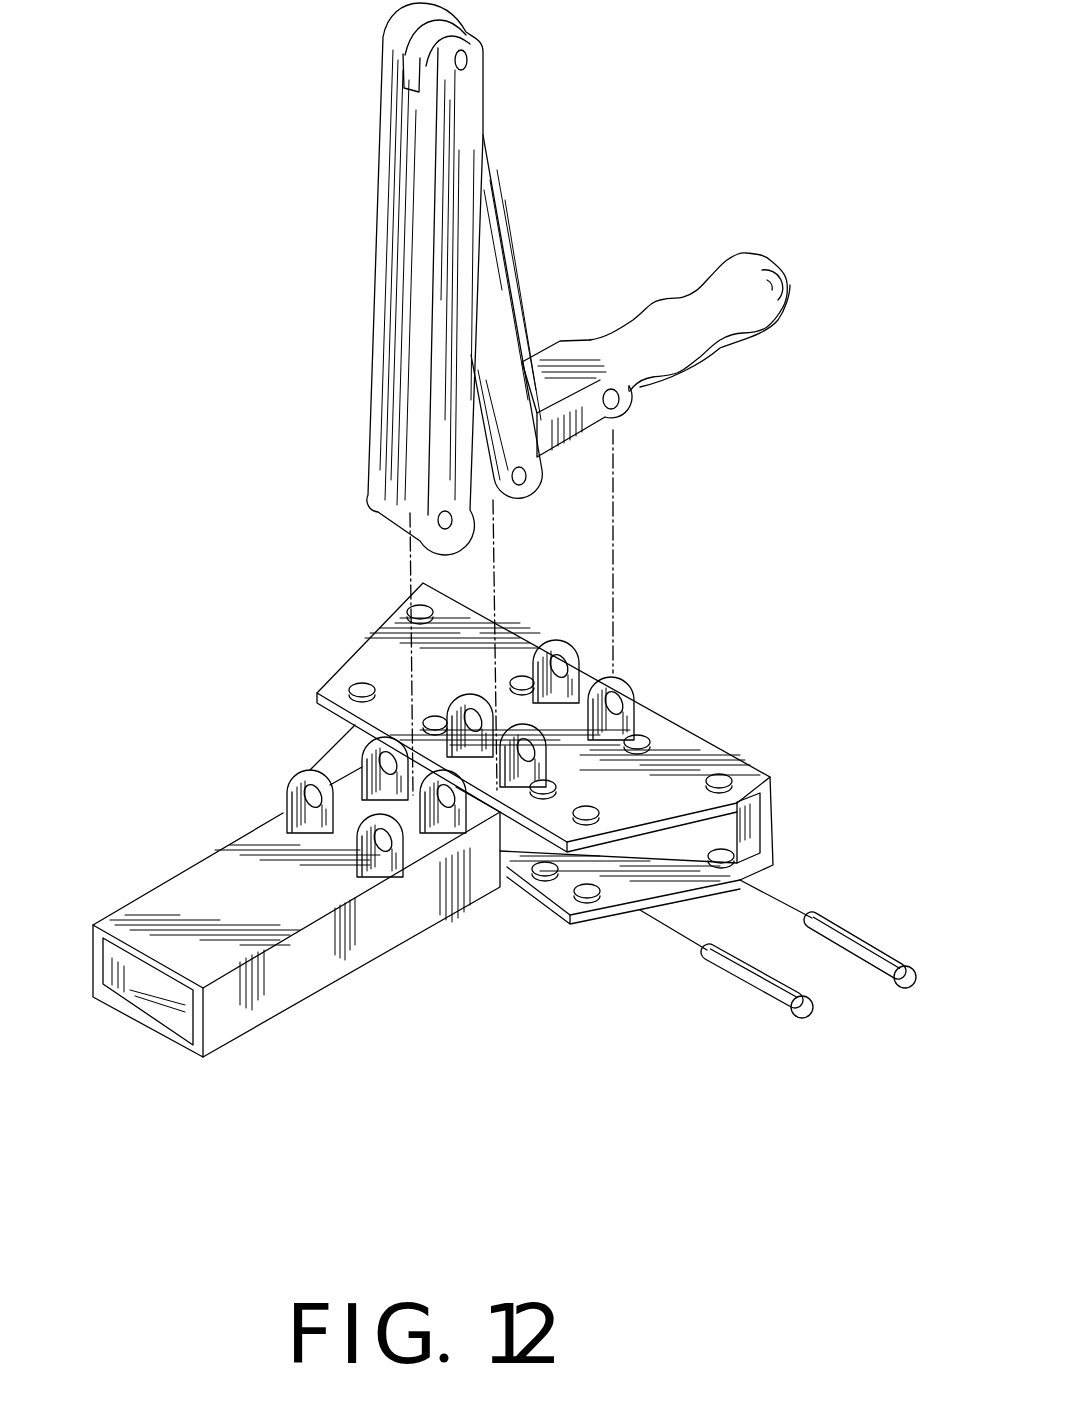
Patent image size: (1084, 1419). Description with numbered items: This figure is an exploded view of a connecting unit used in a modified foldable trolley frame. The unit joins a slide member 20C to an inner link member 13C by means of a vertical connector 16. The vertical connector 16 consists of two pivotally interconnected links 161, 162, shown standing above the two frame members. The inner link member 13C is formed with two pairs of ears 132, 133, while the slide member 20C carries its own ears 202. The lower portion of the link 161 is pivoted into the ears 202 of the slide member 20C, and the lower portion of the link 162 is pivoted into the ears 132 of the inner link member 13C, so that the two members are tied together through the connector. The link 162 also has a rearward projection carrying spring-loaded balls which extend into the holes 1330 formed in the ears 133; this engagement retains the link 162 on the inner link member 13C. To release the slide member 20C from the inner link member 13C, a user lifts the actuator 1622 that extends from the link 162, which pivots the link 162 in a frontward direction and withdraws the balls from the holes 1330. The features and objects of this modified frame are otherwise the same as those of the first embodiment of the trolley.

The vertical connector 16 is at (375, 151).
The link 161 is at (392, 319).
The link 162 is at (500, 297).
The actuator 1622 is at (737, 281).
The inner link member 13C is at (747, 783).
The ears 132 is at (447, 717).
The ears 133 is at (628, 685).
The holes 1330 is at (622, 700).
The slide member 20C is at (385, 967).
The ears 202 is at (333, 745).